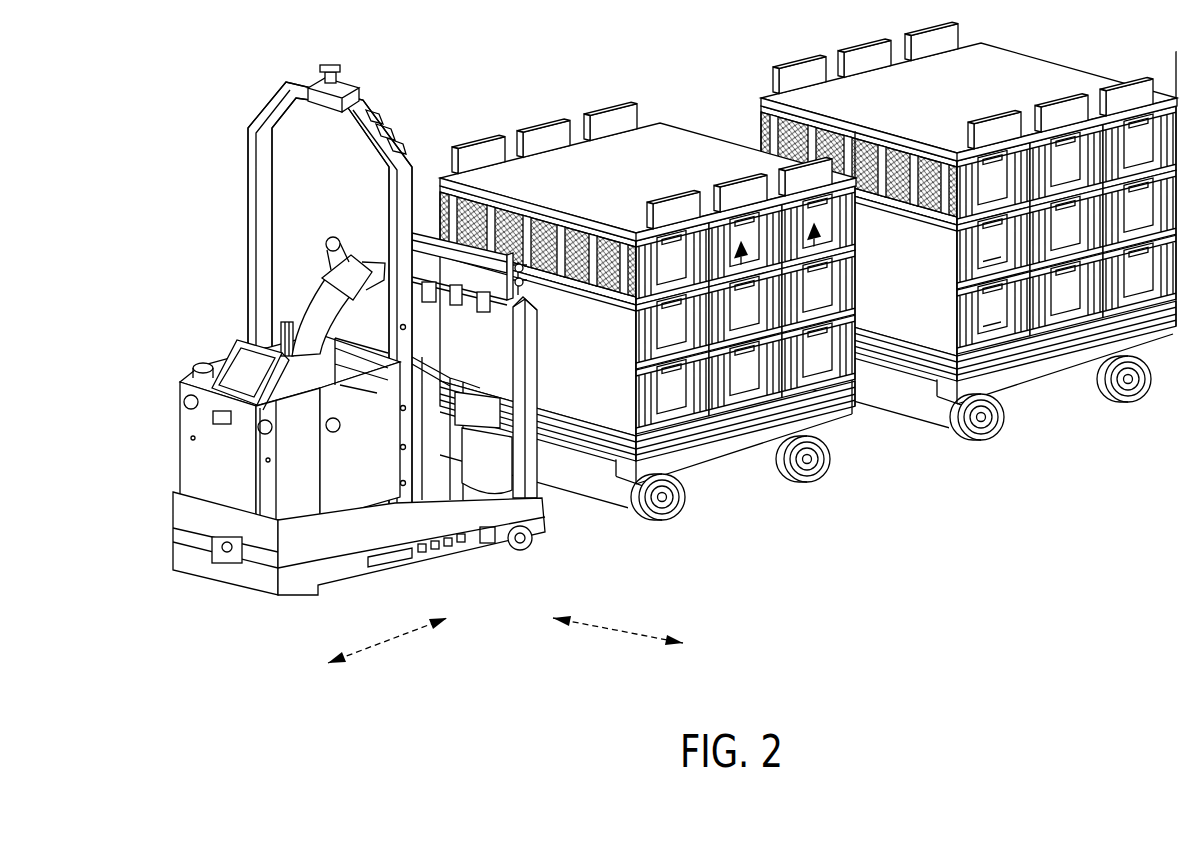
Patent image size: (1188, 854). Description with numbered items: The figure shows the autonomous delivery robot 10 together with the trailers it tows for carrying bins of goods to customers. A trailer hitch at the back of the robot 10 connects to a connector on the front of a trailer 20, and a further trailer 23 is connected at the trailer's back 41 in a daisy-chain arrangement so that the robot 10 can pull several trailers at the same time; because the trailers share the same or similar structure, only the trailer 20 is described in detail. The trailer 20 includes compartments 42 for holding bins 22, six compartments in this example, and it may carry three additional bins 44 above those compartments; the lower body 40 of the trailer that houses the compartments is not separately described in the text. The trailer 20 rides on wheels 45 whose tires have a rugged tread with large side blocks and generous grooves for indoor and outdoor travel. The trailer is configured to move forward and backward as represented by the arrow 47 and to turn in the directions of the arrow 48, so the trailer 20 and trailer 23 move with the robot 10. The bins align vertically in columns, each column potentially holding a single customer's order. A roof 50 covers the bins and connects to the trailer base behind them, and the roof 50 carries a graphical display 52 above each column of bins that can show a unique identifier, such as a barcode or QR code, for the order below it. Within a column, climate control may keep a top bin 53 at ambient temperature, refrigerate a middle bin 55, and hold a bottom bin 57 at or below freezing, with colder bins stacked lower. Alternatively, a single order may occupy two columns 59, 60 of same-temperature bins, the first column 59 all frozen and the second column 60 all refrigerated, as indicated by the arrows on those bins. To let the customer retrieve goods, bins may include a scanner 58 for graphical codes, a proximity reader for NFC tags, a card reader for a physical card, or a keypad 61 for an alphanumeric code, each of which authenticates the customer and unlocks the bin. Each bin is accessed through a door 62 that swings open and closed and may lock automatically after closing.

The robot 10 is at (185, 378).
The trailer 20 is at (660, 323).
The bins 22 is at (732, 413).
The trailer 23 is at (954, 220).
The storage body 40 is at (614, 399).
The back 41 is at (852, 410).
The compartments 42 is at (693, 457).
The additional bins 44 is at (780, 190).
The wheels 45 is at (823, 480).
The arrow 47 is at (395, 640).
The arrow 48 is at (607, 630).
The roof 50 is at (660, 176).
The graphical display 52 is at (647, 210).
The top bin 53 is at (672, 264).
The middle bin 55 is at (672, 328).
The bottom bin 57 is at (672, 393).
The scanner 58 is at (993, 184).
The first column 59 is at (745, 310).
The second column 60 is at (818, 291).
The keypad 61 is at (1066, 166).
The door 62 is at (1053, 340).